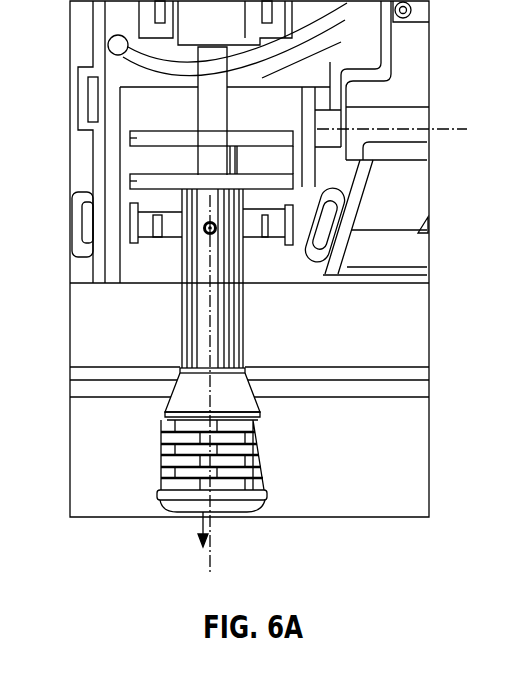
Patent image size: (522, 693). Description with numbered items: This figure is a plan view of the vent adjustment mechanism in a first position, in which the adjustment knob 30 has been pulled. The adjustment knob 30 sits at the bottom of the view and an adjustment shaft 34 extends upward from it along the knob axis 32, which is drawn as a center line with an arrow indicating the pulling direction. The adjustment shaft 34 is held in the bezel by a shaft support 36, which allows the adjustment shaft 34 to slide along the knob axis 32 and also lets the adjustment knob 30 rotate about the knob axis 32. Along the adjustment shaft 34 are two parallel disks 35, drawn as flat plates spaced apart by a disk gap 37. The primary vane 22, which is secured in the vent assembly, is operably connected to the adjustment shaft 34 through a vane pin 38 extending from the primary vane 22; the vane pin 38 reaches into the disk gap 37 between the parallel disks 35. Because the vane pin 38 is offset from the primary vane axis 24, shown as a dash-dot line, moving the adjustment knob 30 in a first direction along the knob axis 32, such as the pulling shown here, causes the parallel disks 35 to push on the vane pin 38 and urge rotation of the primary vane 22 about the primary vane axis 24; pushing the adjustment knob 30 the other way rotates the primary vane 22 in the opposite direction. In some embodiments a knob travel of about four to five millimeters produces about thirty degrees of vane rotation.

The primary vane 22 is at (420, 68).
The primary vane axis 24 is at (457, 131).
The adjustment knob 30 is at (167, 460).
The knob axis 32 is at (208, 552).
The adjustment shaft 34 is at (183, 342).
The parallel disks 35 is at (137, 138).
The shaft support 36 is at (133, 222).
The disk gap 37 is at (167, 162).
The vane pin 38 is at (263, 163).